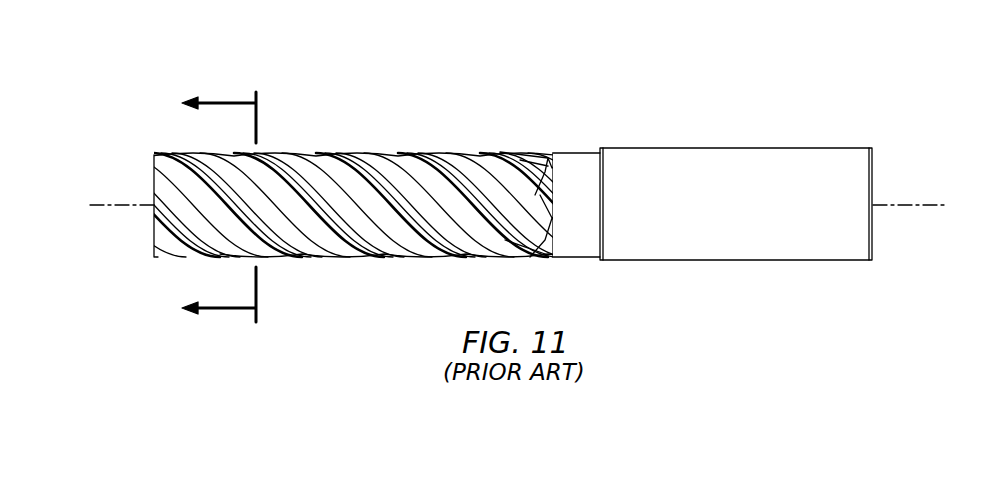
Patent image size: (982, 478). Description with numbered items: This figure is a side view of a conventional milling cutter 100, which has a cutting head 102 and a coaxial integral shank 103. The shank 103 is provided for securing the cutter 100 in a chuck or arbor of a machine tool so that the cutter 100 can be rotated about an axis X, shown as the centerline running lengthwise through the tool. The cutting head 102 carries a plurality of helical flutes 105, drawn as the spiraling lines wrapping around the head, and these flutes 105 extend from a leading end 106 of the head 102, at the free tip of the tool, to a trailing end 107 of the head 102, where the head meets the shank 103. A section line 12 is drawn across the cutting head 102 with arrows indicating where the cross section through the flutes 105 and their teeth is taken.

The milling cutter 100 is at (436, 134).
The cutting head 102 is at (397, 168).
The shank 103 is at (722, 158).
The helical flutes 105 is at (385, 185).
The leading end 106 is at (154, 178).
The trailing end 107 is at (554, 167).
The section line 12- 12 is at (243, 207).
The axis X is at (110, 207).